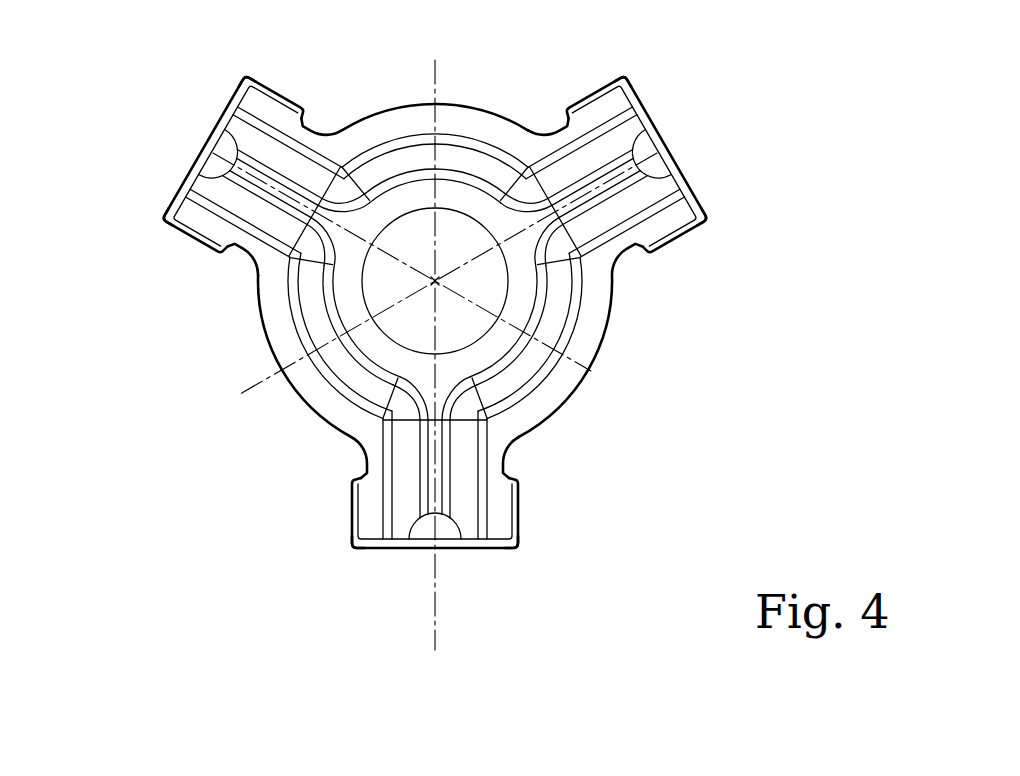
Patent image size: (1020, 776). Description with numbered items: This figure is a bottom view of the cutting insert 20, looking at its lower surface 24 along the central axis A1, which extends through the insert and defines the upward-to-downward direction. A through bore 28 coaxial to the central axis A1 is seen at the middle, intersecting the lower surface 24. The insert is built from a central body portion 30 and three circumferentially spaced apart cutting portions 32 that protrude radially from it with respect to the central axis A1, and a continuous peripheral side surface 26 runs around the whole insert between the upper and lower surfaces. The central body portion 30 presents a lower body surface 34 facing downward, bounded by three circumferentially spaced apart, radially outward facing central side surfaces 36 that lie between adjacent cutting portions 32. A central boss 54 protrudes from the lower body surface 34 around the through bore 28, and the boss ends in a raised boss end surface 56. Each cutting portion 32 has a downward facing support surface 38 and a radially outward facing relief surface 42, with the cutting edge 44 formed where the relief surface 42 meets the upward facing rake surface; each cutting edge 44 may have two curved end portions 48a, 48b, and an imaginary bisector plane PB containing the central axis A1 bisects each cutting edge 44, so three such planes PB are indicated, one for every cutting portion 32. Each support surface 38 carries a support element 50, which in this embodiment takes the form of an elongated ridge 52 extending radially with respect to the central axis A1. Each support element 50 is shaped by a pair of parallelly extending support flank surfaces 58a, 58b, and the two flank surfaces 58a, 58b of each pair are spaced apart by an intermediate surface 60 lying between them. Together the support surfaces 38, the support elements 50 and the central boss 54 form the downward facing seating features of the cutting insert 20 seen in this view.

The cutting insert 20 is at (315, 472).
The lower surface 24 is at (380, 352).
The peripheral side surface 26 is at (577, 398).
The through bore 28 is at (468, 251).
The central body portion 30 is at (558, 307).
The cutting portion 32 is at (275, 108).
The lower body surface 34 is at (590, 288).
The central side surface 36 is at (490, 106).
The support surface 38 is at (196, 210).
The relief surface 42 is at (225, 122).
The cutting edge 44 is at (640, 135).
The curved end portion 48a is at (252, 80).
The curved end portion 48b is at (173, 213).
The support element 50 is at (201, 181).
The elongated ridge 52 is at (424, 340).
The central boss 54 is at (345, 300).
The raised boss end surface 56 is at (470, 204).
The support flank surface 58a is at (267, 150).
The support flank surface 58b is at (258, 218).
The intermediate surface 60 is at (238, 118).
The central axis A1 is at (434, 284).
The imaginary bisector plane PB is at (610, 382).